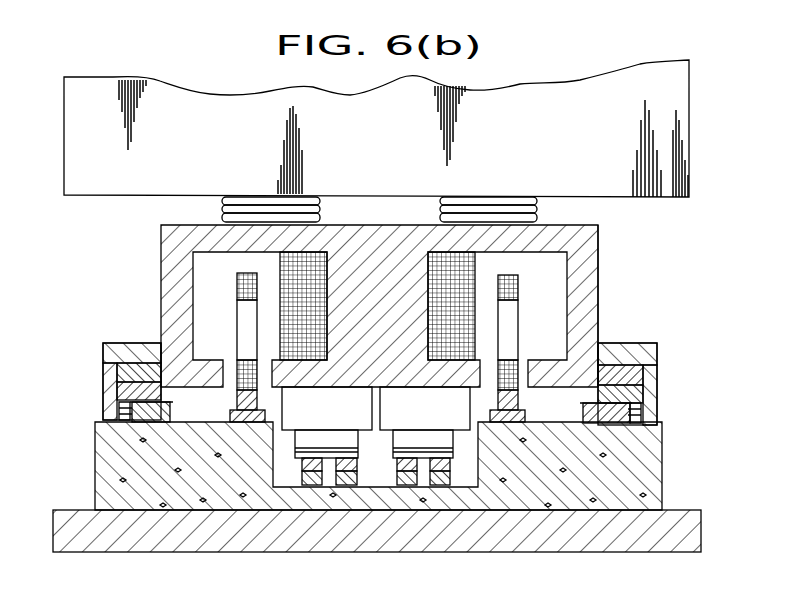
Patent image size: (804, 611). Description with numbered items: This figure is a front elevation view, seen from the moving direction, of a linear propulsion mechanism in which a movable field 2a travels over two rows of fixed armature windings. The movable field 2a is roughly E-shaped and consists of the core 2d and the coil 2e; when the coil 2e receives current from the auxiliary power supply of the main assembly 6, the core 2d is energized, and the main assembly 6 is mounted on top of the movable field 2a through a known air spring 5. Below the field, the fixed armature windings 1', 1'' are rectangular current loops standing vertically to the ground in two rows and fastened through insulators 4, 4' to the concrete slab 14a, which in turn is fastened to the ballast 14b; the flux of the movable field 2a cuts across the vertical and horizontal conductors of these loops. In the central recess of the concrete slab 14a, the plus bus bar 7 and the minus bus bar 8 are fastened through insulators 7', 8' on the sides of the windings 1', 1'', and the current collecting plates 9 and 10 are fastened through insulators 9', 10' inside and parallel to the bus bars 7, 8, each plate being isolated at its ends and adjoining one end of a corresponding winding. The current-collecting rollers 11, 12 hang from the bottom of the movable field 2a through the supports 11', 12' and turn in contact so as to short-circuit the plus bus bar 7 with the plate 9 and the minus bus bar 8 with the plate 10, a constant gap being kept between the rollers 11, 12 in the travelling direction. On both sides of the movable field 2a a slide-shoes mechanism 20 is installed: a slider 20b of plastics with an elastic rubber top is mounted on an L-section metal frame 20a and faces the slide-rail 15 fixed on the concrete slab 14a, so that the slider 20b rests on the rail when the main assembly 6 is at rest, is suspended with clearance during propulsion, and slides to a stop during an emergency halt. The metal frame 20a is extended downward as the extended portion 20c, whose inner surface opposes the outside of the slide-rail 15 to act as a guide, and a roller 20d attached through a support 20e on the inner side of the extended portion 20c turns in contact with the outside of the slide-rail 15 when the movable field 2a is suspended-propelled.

The main assembly 6 is at (557, 96).
The air spring 5 is at (516, 200).
The movable field 2a is at (611, 297).
The core 2d is at (600, 268).
The coil 2e is at (284, 272).
The fixed armature winding 1'' is at (233, 341).
The fixed armature winding 1' is at (526, 334).
The insulator 4' is at (228, 408).
The insulator 4 is at (518, 408).
The slide-shoes mechanism 20 is at (143, 336).
The metal frame 20a is at (110, 346).
The slider 20b is at (121, 373).
The extended portion 20c is at (114, 401).
The roller 20d is at (128, 428).
The support 20e is at (122, 416).
The slide-rail 15 is at (170, 413).
The concrete slab 14a is at (658, 488).
The ballast 14b is at (648, 552).
The support 12' is at (327, 408).
The current-collecting roller 12 is at (297, 456).
The support 11' is at (421, 389).
The current-collecting roller 11 is at (423, 426).
The minus bus bar 8 is at (293, 501).
The insulator 8' is at (302, 531).
The current-collecting plate 10 is at (364, 464).
The insulator 10' is at (345, 531).
The current-collecting plate 9 is at (394, 501).
The insulator 9' is at (416, 531).
The plus bus bar 7 is at (465, 462).
The insulator 7' is at (476, 489).